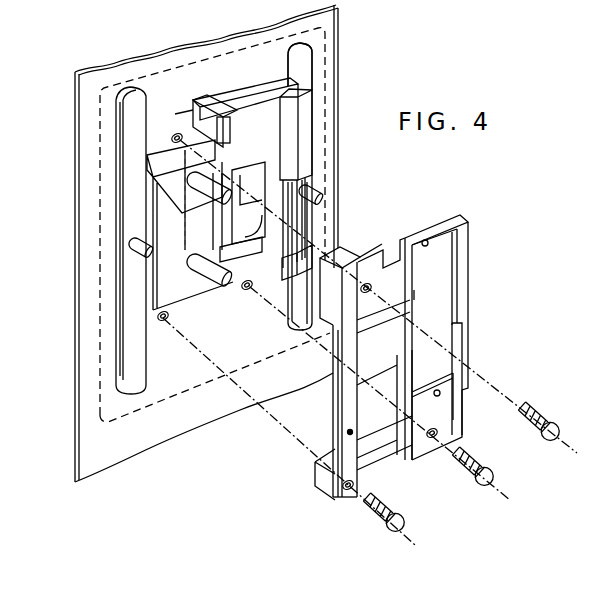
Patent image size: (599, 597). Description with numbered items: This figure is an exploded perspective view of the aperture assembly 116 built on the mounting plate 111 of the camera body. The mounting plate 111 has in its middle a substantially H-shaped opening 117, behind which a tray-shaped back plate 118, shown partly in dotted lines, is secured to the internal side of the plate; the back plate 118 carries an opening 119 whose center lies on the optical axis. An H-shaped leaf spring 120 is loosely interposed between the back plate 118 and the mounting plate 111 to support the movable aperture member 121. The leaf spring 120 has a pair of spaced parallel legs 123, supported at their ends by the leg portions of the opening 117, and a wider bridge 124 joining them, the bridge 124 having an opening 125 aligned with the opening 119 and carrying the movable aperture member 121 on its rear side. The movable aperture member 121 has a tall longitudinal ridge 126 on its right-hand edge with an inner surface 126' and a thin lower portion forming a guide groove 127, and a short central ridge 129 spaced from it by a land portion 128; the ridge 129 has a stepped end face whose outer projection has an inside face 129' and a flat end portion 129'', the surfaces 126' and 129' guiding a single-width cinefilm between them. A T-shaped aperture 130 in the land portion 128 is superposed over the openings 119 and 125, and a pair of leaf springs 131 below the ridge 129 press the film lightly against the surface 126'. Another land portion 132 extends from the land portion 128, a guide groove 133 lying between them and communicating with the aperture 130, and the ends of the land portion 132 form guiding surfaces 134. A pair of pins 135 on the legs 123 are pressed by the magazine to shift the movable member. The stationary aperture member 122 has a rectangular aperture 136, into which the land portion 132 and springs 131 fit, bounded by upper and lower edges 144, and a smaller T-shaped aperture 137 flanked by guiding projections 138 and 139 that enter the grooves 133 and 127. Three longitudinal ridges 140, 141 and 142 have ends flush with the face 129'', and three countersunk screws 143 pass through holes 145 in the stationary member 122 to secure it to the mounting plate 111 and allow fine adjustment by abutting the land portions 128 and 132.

The mounting plate 111 is at (83, 222).
The aperture assembly 116 is at (443, 183).
The substantially H-shaped opening 117 is at (117, 198).
The tray-shaped back plate 118 is at (100, 115).
The opening 119 is at (193, 133).
The H-shaped leaf spring 120 is at (128, 287).
The movable aperture member 121 is at (305, 110).
The stationary aperture member 122 is at (470, 280).
The legs 123 is at (122, 357).
The bridge 124 is at (185, 160).
The opening 125 is at (287, 232).
The longitudinal ridge 126 is at (327, 134).
The inner surface 126' is at (282, 66).
The guide groove 127 is at (297, 218).
The land portion 128 is at (245, 111).
The short longitudinal ridge 129 is at (214, 108).
The inside of outer projection 129' is at (175, 103).
The flat end portion 129'' is at (249, 129).
The T-shaped aperture 130 is at (250, 286).
The leaf springs 131 is at (204, 192).
The land portion 132 is at (176, 318).
The guide groove 133 is at (268, 236).
The guiding surfaces 134 is at (147, 182).
The pins 135 is at (132, 249).
The rectangular aperture 136 is at (362, 402).
The T-shaped aperture 137 is at (445, 358).
The guiding projection 138 is at (398, 383).
The guiding projection 139 is at (470, 335).
The longitudinal ridge 140 is at (462, 243).
The longitudinal ridge 141 is at (415, 280).
The longitudinal ridge 142 is at (350, 344).
The countersunk screws 143 is at (395, 513).
The upper and lower edges 144 is at (370, 312).
The hole 145 is at (425, 240).